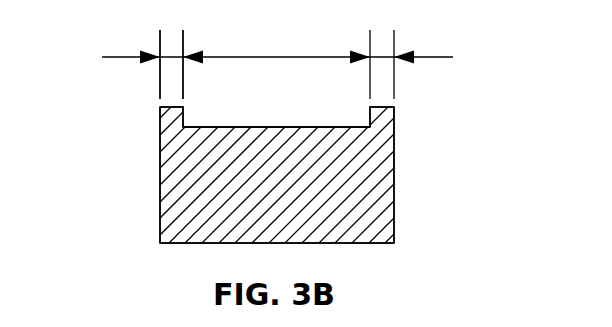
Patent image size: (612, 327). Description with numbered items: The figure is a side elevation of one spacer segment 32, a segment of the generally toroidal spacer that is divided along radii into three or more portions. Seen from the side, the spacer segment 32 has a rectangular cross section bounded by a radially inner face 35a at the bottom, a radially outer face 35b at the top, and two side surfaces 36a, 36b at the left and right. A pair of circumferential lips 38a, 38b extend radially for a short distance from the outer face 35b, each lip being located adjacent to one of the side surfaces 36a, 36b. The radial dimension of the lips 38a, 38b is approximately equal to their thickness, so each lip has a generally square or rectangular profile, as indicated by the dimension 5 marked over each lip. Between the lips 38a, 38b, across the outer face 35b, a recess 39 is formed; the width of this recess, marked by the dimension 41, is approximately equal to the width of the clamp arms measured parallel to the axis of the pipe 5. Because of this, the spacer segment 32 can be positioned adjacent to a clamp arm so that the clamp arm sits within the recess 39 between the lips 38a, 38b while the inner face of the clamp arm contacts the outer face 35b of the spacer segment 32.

The spacer segment 32 is at (181, 227).
The radially inner face 35a is at (393, 243).
The radially outer face 35b is at (330, 127).
The side surface 36a is at (160, 168).
The side surface 36b is at (394, 188).
The circumferential lip 38a is at (168, 113).
The circumferential lip 38b is at (375, 111).
The recess 39 is at (277, 113).
The width of recessed region 41 is at (277, 61).
The pipe 5 is at (275, 61).